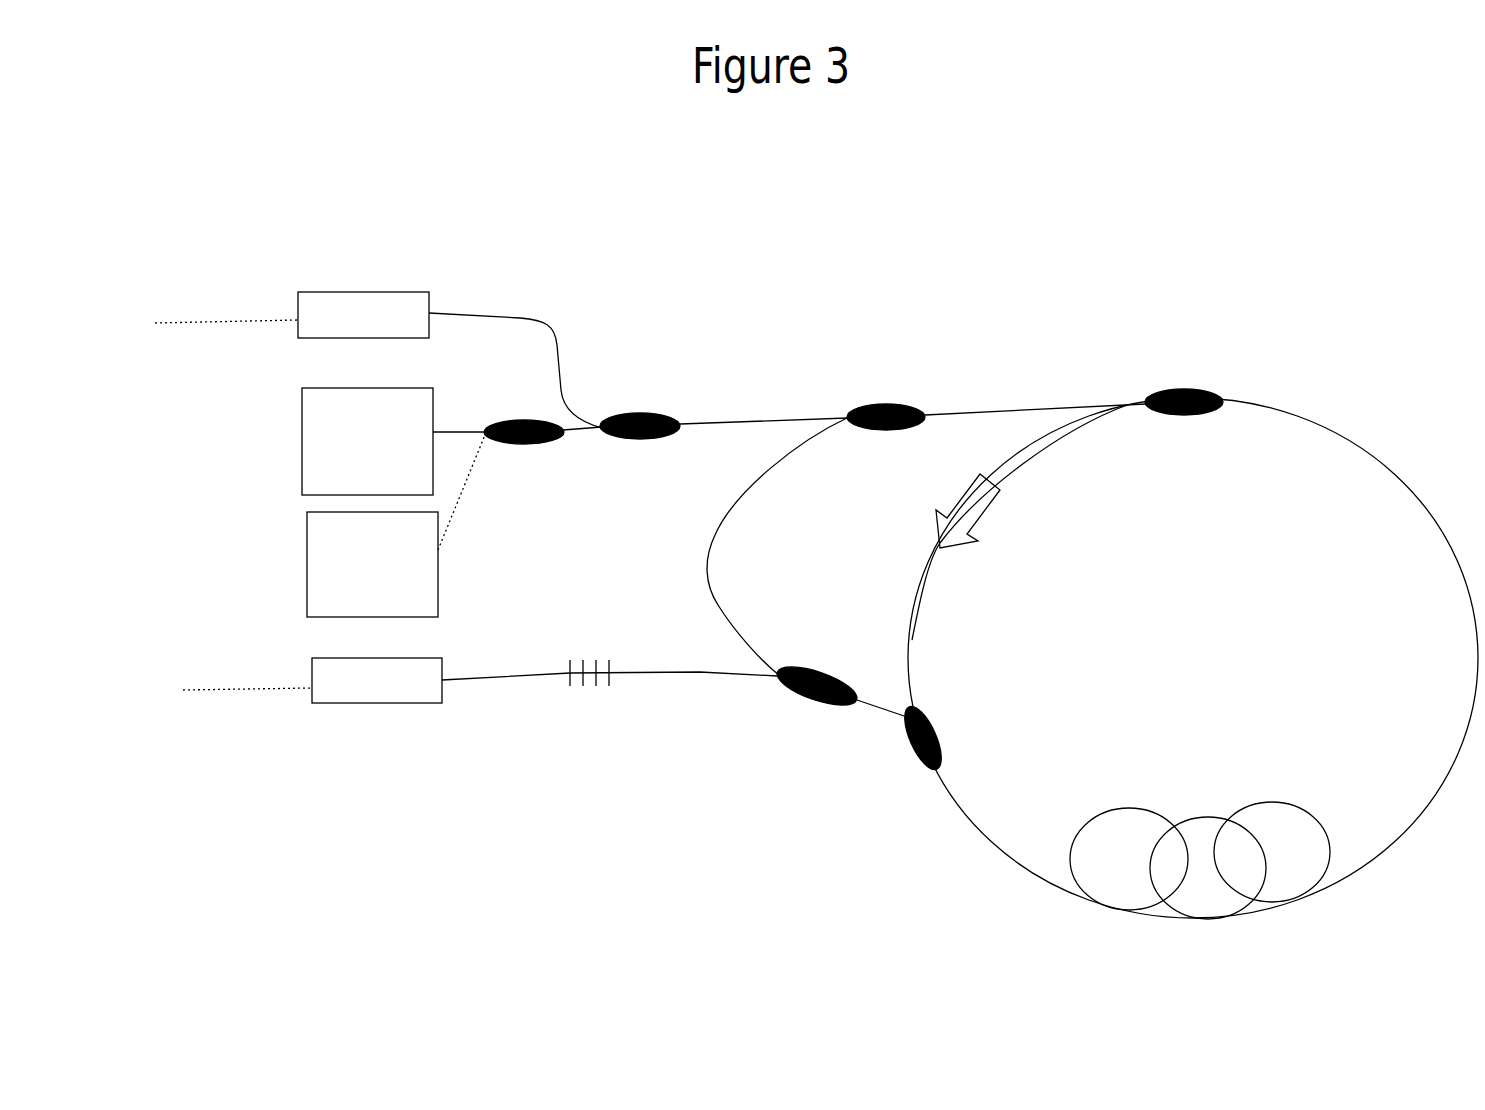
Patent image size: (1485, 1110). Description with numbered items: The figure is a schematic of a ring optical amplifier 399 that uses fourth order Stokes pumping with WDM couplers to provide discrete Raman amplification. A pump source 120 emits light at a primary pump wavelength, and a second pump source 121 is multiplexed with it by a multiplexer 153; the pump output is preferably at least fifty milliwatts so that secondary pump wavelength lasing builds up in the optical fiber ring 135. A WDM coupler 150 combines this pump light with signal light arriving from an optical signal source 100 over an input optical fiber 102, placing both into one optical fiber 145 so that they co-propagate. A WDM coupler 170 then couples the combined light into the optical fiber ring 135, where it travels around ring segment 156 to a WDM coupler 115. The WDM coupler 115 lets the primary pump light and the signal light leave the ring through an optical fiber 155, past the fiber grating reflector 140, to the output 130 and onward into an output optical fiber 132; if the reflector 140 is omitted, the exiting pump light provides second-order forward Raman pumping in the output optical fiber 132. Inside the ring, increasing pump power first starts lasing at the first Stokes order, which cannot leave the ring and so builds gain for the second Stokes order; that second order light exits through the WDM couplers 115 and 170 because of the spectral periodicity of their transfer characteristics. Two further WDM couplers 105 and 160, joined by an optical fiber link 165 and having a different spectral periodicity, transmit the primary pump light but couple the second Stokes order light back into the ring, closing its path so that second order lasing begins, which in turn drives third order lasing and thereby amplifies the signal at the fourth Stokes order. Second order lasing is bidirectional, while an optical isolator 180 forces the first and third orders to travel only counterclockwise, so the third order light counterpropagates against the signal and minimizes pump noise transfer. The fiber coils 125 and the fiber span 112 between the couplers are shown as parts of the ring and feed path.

The fiber laser system 399 is at (1037, 285).
The optical signal source 100 is at (343, 290).
The input optical fiber 102 is at (208, 325).
The pump source 120 is at (300, 453).
The pump source 121 is at (305, 577).
The multiplexer 153 is at (512, 446).
The WDM coupler 150 is at (642, 413).
The optical fiber 145 is at (755, 416).
The WDM coupler 160 is at (872, 403).
The fiber segment 112 is at (993, 406).
The WDM coupler 170 is at (1180, 389).
The optical fiber ring 135 is at (1354, 444).
The ring fiber segment 156 is at (925, 577).
The optical isolator 180 is at (984, 525).
The optical fiber link 165 is at (704, 558).
The WDM coupler 105 is at (806, 704).
The optical fiber 155 is at (882, 713).
The WDM coupler 115 is at (909, 752).
The fiber coils 125 is at (1235, 799).
The fiber grating reflector 140 is at (597, 689).
The output 130 is at (353, 706).
The output optical fiber 132 is at (220, 693).